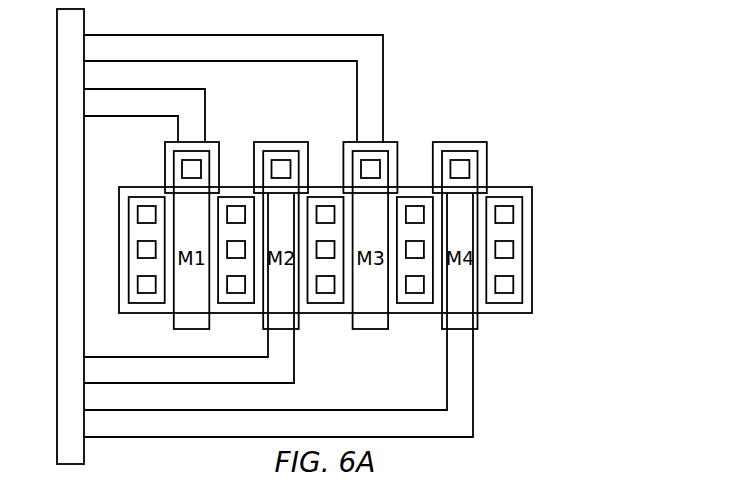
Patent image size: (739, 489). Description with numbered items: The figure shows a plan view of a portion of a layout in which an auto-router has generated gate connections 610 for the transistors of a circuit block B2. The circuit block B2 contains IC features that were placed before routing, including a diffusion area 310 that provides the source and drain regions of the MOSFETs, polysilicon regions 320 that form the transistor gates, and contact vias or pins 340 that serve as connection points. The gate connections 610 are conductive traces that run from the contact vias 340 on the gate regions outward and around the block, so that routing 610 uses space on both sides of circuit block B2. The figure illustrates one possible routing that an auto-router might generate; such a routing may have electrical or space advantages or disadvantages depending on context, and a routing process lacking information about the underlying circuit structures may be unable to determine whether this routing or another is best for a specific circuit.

The auto-router-generated gate connection 610 is at (384, 79).
The contact via 340 is at (280, 169).
The diffusion area 310 is at (532, 203).
The polysilicon region 320 is at (172, 323).
The circuit block B2 is at (548, 249).